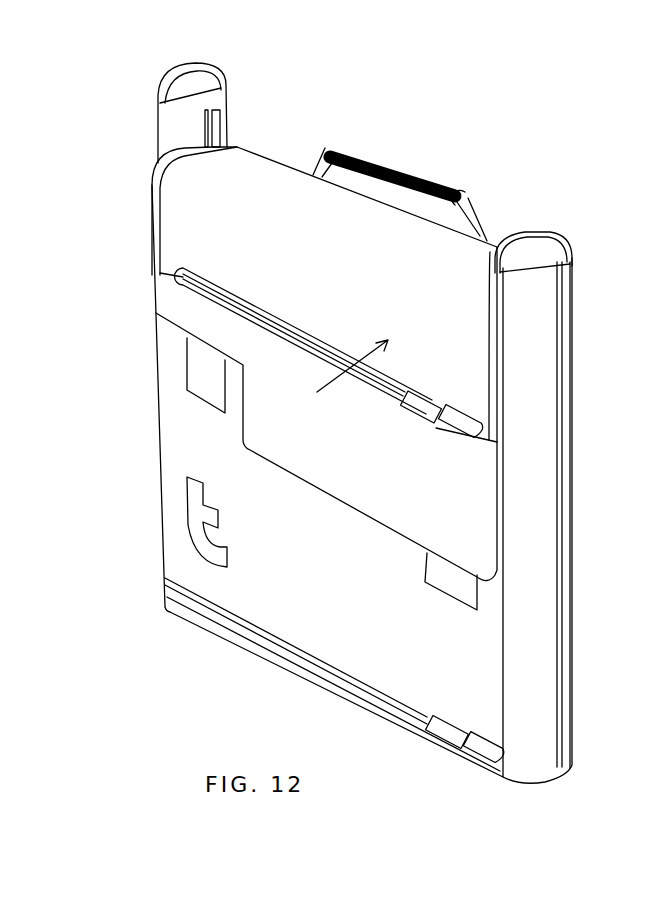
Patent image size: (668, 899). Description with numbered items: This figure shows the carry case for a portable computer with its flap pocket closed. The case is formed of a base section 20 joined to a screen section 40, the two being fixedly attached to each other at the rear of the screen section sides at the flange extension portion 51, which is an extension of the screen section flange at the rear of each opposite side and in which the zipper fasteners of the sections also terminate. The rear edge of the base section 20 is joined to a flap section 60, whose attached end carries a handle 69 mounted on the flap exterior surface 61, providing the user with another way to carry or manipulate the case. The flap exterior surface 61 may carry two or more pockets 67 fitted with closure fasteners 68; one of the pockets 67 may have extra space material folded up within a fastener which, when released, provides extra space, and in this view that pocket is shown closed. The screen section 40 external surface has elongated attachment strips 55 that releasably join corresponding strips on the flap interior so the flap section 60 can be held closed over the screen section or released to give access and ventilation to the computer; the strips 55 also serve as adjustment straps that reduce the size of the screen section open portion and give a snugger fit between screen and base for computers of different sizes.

The base section 20 is at (570, 367).
The screen section 40 is at (417, 698).
The flange extension portion 51 is at (202, 130).
The attachment strips 55 is at (207, 393).
The flap section 60 is at (158, 305).
The exterior surface 61 is at (368, 310).
The pockets 67 is at (353, 423).
The closure fasteners 68 is at (320, 360).
The handle 69 is at (403, 172).